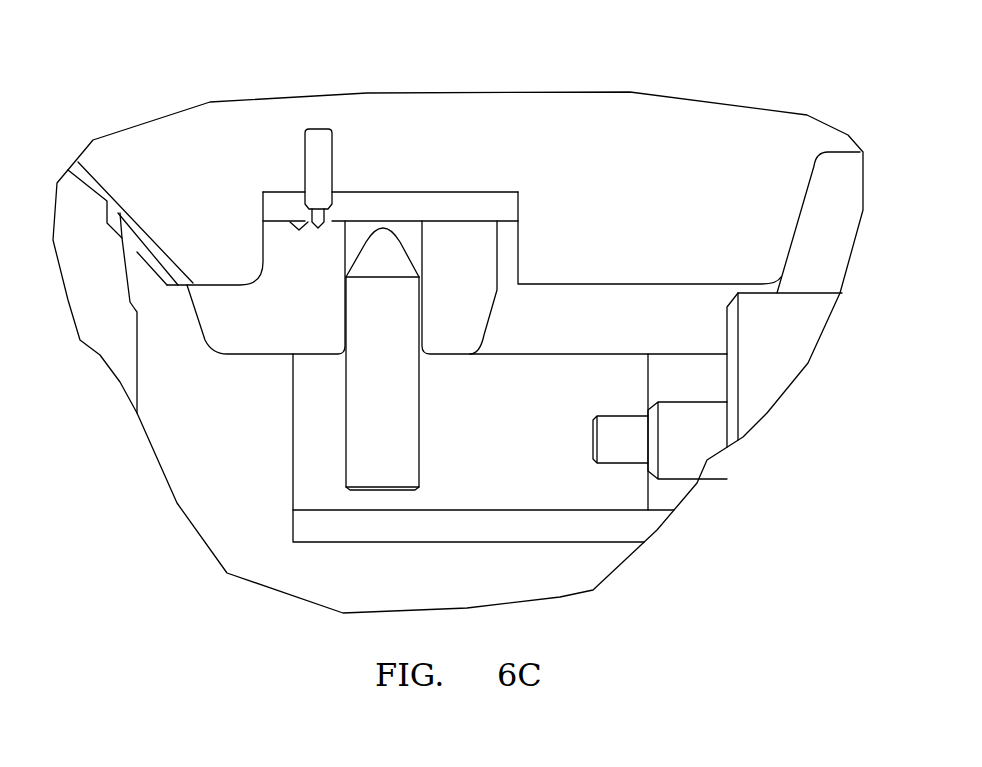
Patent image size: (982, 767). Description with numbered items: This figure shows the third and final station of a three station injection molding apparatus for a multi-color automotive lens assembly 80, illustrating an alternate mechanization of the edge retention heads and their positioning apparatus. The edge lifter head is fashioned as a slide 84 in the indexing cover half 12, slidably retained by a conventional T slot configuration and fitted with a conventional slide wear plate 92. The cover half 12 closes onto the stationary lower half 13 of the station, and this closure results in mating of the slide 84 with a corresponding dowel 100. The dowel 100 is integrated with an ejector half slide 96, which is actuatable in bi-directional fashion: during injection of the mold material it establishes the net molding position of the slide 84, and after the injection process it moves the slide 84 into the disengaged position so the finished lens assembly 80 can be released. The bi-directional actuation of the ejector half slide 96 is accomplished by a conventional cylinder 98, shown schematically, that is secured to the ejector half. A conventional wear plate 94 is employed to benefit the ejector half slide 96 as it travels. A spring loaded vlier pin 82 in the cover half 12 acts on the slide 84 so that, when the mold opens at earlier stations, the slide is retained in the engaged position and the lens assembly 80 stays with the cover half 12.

The cover half 12 is at (702, 173).
The stationary lower half 13 is at (808, 248).
The lens assembly 80 is at (100, 185).
The vlier pin 82 is at (319, 157).
The slide 84 is at (468, 238).
The slide wear plate 92 is at (507, 205).
The wear plate 94 is at (625, 527).
The ejector half slide 96 is at (581, 387).
The cylinder 98 is at (768, 313).
The dowel 100 is at (377, 420).